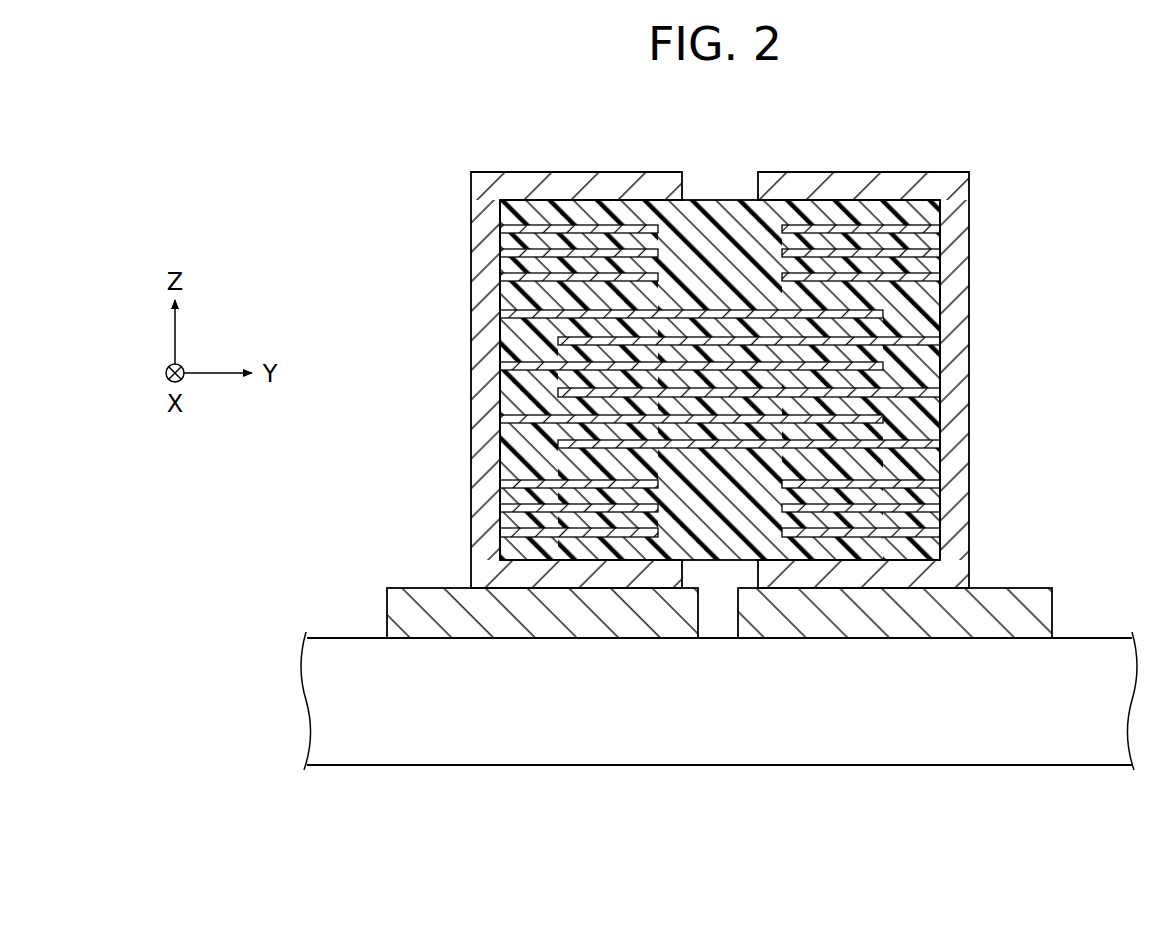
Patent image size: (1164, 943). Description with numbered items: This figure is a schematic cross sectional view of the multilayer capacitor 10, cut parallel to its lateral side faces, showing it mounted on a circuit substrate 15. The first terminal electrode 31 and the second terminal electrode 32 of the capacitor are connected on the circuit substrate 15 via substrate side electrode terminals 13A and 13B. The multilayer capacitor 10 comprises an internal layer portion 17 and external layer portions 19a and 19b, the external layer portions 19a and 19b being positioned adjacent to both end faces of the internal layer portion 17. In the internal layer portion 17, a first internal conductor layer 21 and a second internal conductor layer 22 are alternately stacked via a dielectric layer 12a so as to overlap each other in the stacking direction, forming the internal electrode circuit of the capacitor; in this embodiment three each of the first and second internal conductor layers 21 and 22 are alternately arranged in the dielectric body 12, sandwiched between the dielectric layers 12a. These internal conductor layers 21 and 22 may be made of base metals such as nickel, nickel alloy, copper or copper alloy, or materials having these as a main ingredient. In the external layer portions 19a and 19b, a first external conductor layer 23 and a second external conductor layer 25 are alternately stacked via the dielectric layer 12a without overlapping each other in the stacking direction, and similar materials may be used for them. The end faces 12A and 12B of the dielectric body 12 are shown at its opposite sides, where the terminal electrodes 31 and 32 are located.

The multilayer capacitor 10 is at (1029, 155).
The dielectric body 12 is at (720, 347).
The first end surface of element body 12A is at (946, 409).
The second end surface of element body 12B is at (495, 472).
The dielectric layer 12a is at (882, 350).
The substrate side electrode terminal 13A is at (908, 610).
The substrate side electrode terminal 13B is at (458, 620).
The circuit substrate 15 is at (1062, 722).
The internal layer portion 17 is at (462, 306).
The external layer portion 19a is at (980, 217).
The external layer portion 19b is at (980, 475).
The first internal conductor layer 21 is at (940, 338).
The second internal conductor layer 22 is at (940, 313).
The first external conductor layer 23 is at (910, 278).
The second external conductor layer 25 is at (505, 228).
The first terminal electrode 31 is at (843, 186).
The second terminal electrode 32 is at (578, 190).